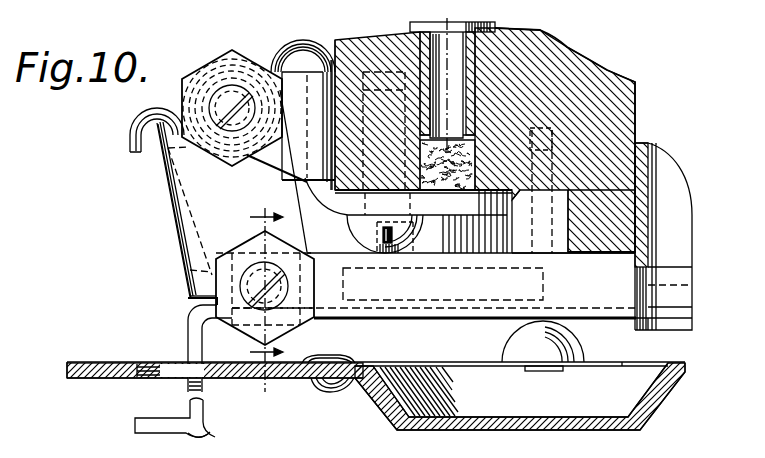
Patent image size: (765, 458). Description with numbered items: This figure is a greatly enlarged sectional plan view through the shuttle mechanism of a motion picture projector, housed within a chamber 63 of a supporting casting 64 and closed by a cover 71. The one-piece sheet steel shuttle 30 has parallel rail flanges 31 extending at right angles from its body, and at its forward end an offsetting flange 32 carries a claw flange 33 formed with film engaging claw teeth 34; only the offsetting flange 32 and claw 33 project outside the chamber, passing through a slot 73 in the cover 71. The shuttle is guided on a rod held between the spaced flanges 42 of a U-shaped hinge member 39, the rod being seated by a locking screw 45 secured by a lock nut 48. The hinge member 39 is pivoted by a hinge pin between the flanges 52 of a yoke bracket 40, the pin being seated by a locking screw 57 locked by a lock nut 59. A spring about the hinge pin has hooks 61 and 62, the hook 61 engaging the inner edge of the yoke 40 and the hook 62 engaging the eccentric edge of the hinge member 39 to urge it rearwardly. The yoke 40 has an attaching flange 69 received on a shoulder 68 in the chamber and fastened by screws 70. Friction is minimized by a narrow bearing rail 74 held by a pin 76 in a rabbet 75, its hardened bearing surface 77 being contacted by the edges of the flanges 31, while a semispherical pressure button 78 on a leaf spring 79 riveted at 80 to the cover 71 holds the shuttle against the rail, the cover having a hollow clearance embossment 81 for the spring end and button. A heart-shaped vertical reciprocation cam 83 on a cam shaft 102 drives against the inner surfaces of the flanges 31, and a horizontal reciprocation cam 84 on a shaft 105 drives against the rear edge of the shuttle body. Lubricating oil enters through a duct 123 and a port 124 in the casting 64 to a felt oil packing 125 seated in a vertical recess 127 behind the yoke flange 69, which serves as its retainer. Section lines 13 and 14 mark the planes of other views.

The section line 13- 13 is at (262, 350).
The section line 14 is at (143, 457).
The shuttle member 30 is at (190, 318).
The rail flanges 31 is at (600, 294).
The offsetting flange 32 is at (196, 350).
The claw flange 33 is at (192, 437).
The claw teeth 34 is at (143, 424).
The hinge member 39 is at (180, 236).
The yoke bracket 40 is at (283, 70).
The hinge flanges 42 is at (210, 203).
The locking screw 45 is at (210, 278).
The lock nut 48 is at (298, 298).
The yoke flanges 52 is at (280, 163).
The locking screw 57 is at (223, 104).
The lock nut 59 is at (217, 66).
The spring hook 61 is at (314, 45).
The spring hook 62 is at (146, 118).
The chamber 63 is at (333, 42).
The supporting casting 64 is at (625, 100).
The shoulder 68 is at (351, 212).
The attaching flange 69 is at (465, 210).
The screws 70 is at (373, 223).
The cover 71 is at (265, 380).
The slot 73 is at (170, 368).
The bearing rail 74 is at (530, 213).
The rabbet 75 is at (570, 205).
The pin 76 is at (548, 150).
The bearing surface 77 is at (540, 253).
The pressure button 78 is at (513, 347).
The leaf spring 79 is at (417, 368).
The rivet 80 is at (330, 385).
The clearance embossment 81 is at (478, 420).
The vertical reciprocation cam 83 is at (543, 293).
The horizontal reciprocation cam 84 is at (650, 320).
The cam shaft 102 is at (495, 30).
The shaft 105 is at (662, 233).
The duct 123 is at (465, 56).
The oil port 124 is at (463, 110).
The oil packing 125 is at (477, 157).
The vertical recess 127 is at (478, 170).